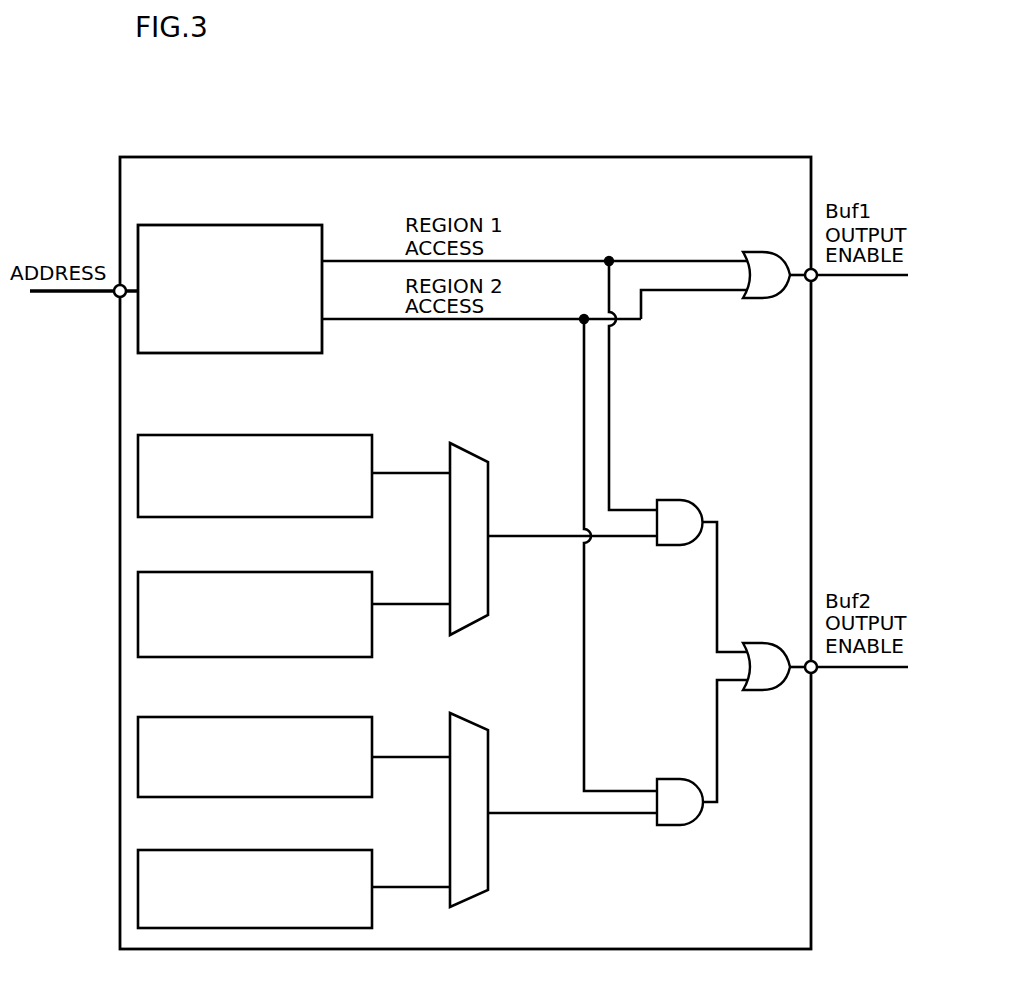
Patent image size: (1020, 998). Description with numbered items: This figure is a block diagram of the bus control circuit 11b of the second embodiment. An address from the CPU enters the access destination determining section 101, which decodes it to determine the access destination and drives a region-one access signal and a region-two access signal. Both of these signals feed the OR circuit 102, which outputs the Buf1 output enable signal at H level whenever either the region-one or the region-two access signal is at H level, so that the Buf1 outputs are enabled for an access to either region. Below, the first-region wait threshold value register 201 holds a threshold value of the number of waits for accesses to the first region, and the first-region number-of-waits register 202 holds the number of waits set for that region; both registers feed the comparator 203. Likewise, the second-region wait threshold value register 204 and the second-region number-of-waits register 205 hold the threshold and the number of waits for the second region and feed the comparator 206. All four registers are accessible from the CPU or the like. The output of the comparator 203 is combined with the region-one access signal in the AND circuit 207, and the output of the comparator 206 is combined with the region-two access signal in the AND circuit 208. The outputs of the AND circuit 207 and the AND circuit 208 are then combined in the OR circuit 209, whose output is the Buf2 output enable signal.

The bus control circuit 11b is at (257, 157).
The access destination determining section 101 is at (203, 224).
The OR circuit 102 is at (752, 250).
The region 1 wait threshold value register 201 is at (203, 434).
The region 1 number-of-waits register 202 is at (203, 572).
The comparator 203 is at (466, 451).
The region 2 wait threshold value register 204 is at (203, 716).
The region 2 number-of-waits register 205 is at (203, 849).
The comparator 206 is at (466, 721).
The AND circuit 207 is at (665, 499).
The AND circuit 208 is at (667, 778).
The OR circuit 209 is at (752, 642).